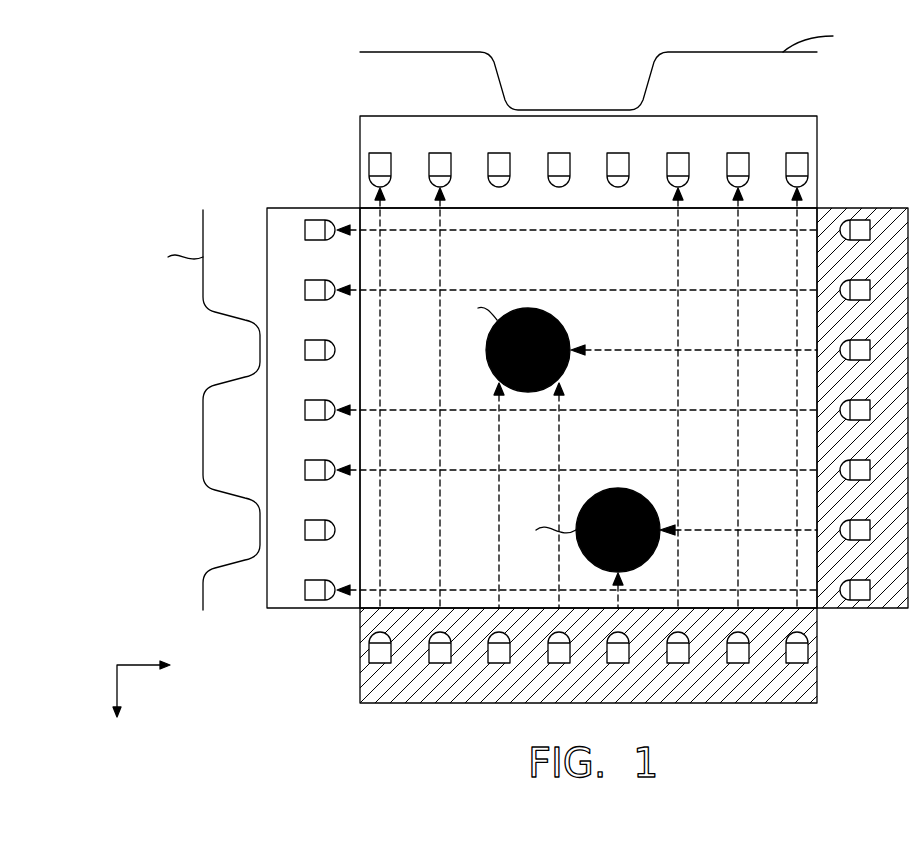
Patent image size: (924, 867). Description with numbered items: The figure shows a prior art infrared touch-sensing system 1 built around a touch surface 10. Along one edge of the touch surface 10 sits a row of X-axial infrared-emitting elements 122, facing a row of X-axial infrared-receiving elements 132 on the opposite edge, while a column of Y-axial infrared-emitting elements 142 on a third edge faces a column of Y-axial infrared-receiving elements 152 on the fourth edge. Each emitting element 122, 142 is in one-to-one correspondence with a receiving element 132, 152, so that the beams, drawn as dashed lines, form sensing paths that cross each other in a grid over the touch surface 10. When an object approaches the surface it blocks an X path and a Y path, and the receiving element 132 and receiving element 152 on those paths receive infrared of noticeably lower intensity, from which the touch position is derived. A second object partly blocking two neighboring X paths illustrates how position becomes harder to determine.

The infrared touch-sensing system 1 is at (236, 111).
The touch surface 10 is at (409, 557).
The X-axial infrared-emitting elements 122 is at (797, 654).
The X-axial infrared-receiving elements 132 is at (372, 166).
The Y-axial infrared-emitting elements 142 is at (861, 220).
The Y-axial infrared-receiving elements 152 is at (319, 597).